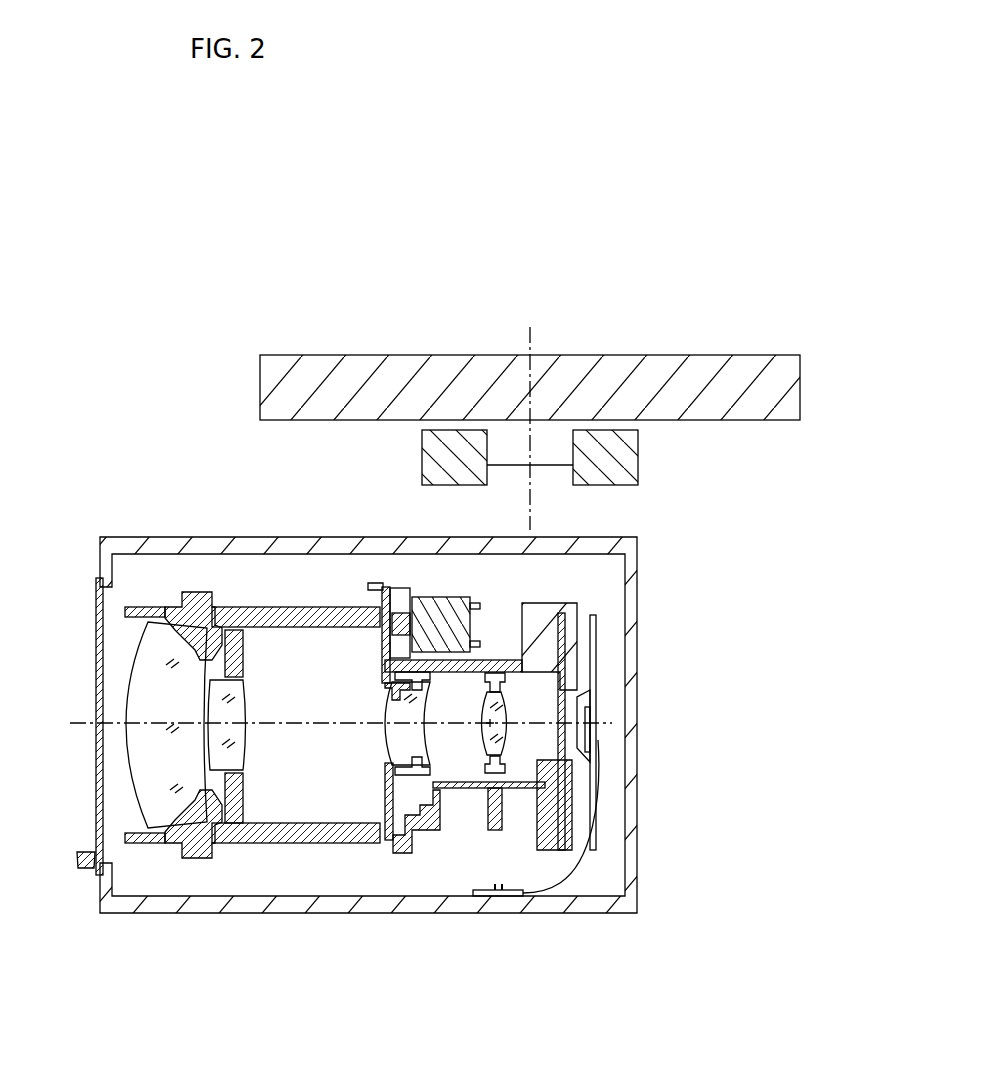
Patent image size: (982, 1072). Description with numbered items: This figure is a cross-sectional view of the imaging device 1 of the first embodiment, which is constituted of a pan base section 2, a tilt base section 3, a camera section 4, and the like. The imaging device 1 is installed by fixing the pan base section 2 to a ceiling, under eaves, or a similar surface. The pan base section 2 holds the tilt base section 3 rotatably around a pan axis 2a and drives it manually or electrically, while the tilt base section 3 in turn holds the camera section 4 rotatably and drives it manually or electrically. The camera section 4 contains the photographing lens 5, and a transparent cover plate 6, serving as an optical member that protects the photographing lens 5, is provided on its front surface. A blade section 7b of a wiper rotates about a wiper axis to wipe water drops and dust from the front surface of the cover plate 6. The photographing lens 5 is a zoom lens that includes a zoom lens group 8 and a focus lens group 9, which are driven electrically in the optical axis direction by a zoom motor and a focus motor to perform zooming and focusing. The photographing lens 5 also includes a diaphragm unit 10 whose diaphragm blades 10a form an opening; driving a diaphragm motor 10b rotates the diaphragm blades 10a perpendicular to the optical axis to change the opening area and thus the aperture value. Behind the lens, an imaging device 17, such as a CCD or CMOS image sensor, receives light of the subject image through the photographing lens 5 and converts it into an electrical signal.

The imaging device 1 is at (228, 212).
The pan base section 2 is at (800, 377).
The pan axis 2a is at (534, 326).
The tilt base section 3 is at (638, 460).
The camera section 4 is at (210, 537).
The photographing lens 5 is at (237, 855).
The cover plate 6 is at (95, 693).
The blade section 7b is at (78, 858).
The zoom lens group 8 is at (253, 735).
The focus lens group 9 is at (481, 742).
The diaphragm unit 10 is at (390, 587).
The diaphragm blades 10a is at (380, 652).
The diaphragm motor 10b is at (456, 597).
The imaging device 17 is at (596, 738).